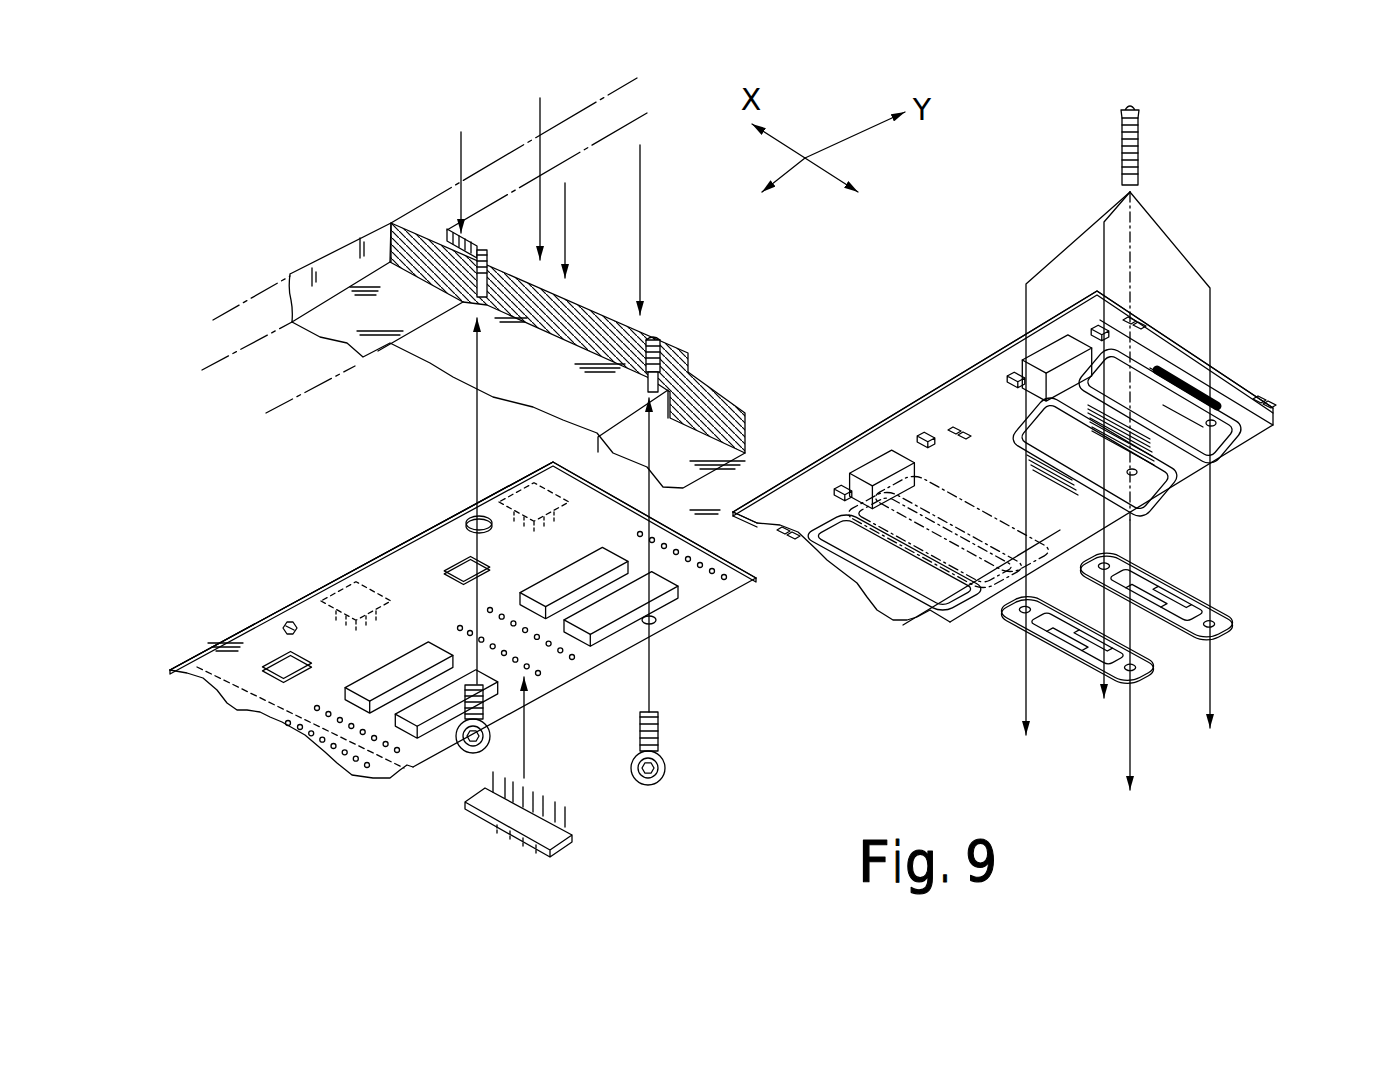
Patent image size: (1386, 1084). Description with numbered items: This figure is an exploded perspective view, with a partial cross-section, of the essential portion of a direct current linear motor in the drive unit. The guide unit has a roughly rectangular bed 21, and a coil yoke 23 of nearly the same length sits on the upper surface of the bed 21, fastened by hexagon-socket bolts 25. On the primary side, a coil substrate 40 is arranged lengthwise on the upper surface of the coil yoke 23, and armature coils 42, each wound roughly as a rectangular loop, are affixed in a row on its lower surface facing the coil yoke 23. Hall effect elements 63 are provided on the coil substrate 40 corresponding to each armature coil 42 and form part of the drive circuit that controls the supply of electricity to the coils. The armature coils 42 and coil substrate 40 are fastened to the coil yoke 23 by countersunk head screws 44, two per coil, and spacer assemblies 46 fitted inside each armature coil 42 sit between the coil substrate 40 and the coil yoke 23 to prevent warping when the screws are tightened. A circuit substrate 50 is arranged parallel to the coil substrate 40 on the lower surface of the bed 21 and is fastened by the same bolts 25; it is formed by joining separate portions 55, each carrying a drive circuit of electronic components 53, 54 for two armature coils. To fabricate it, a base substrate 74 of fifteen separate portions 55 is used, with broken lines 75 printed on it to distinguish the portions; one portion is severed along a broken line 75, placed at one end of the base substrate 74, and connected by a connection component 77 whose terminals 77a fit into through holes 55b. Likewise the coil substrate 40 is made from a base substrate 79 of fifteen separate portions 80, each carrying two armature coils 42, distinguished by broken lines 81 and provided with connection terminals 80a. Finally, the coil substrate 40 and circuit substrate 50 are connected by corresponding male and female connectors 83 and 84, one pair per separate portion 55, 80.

The bed 21 is at (400, 222).
The coil yoke 23 is at (588, 300).
The bolts 25 is at (462, 752).
The coil substrate 40 is at (905, 352).
The armature coils 42 is at (1250, 440).
The countersunk head screws 44 is at (1139, 124).
The spacer assemblies 46 is at (1243, 607).
The circuit substrate 50 is at (380, 552).
The electronic components 53 is at (598, 636).
The electronic components 54 is at (452, 556).
The separate portions 55 is at (421, 548).
The through holes 55b is at (472, 631).
The Hall effect elements 63 is at (1095, 325).
The base substrate 74 is at (260, 607).
The broken lines 75 is at (232, 702).
The connection component 77 is at (515, 835).
The terminals 77a is at (537, 803).
The base substrate 79 is at (768, 505).
The separate portions 80 is at (925, 348).
The connection terminals 80a is at (1124, 327).
The broken lines 81 is at (763, 513).
The male connector 83 is at (1035, 352).
The female connector 84 is at (513, 470).